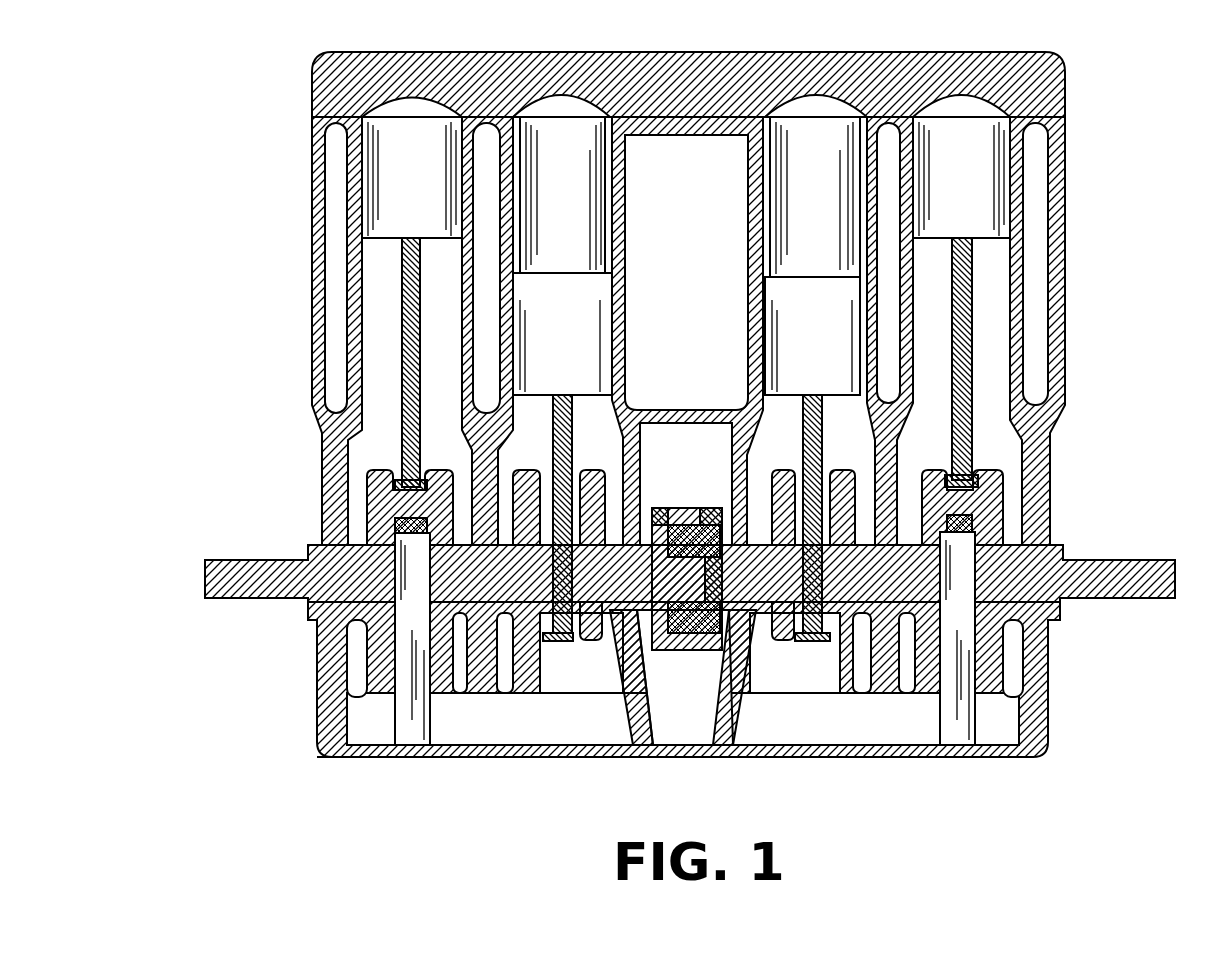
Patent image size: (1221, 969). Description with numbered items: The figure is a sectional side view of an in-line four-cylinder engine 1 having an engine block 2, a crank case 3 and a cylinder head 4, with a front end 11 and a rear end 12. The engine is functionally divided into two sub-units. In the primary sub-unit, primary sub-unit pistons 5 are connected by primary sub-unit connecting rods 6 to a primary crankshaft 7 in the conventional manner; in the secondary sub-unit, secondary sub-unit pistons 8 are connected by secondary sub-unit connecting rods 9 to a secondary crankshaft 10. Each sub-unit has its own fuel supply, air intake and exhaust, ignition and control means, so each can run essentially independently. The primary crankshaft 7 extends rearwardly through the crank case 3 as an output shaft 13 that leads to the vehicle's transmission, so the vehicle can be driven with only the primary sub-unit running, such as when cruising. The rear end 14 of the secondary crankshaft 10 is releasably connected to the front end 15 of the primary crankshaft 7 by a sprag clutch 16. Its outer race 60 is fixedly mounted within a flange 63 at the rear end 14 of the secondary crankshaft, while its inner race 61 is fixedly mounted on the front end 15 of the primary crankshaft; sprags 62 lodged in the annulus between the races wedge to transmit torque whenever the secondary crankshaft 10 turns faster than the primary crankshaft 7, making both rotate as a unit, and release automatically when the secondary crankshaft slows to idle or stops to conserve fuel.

The in-line four-cylinder engine 1 is at (357, 763).
The engine block 2 is at (312, 413).
The crank case 3 is at (317, 692).
The cylinder head 4 is at (312, 97).
The primary sub-unit pistons 5 is at (973, 182).
The primary sub-unit connecting rods 6 is at (970, 352).
The primary crankshaft 7 is at (930, 605).
The secondary sub-unit pistons 8 is at (420, 191).
The secondary sub-unit connecting rods 9 is at (421, 403).
The secondary crankshaft 10 is at (416, 625).
The front end 11 is at (312, 262).
The rear end 12 is at (1065, 275).
The output shaft 13 is at (1136, 558).
The rear end of secondary crankshaft 14 is at (663, 650).
The front end of primary crankshaft 15 is at (723, 600).
The sprag clutch 16 is at (688, 650).
The outer race 60 is at (643, 463).
The inner race 61 is at (702, 510).
The sprags 62 is at (696, 505).
The flange 63 is at (670, 524).